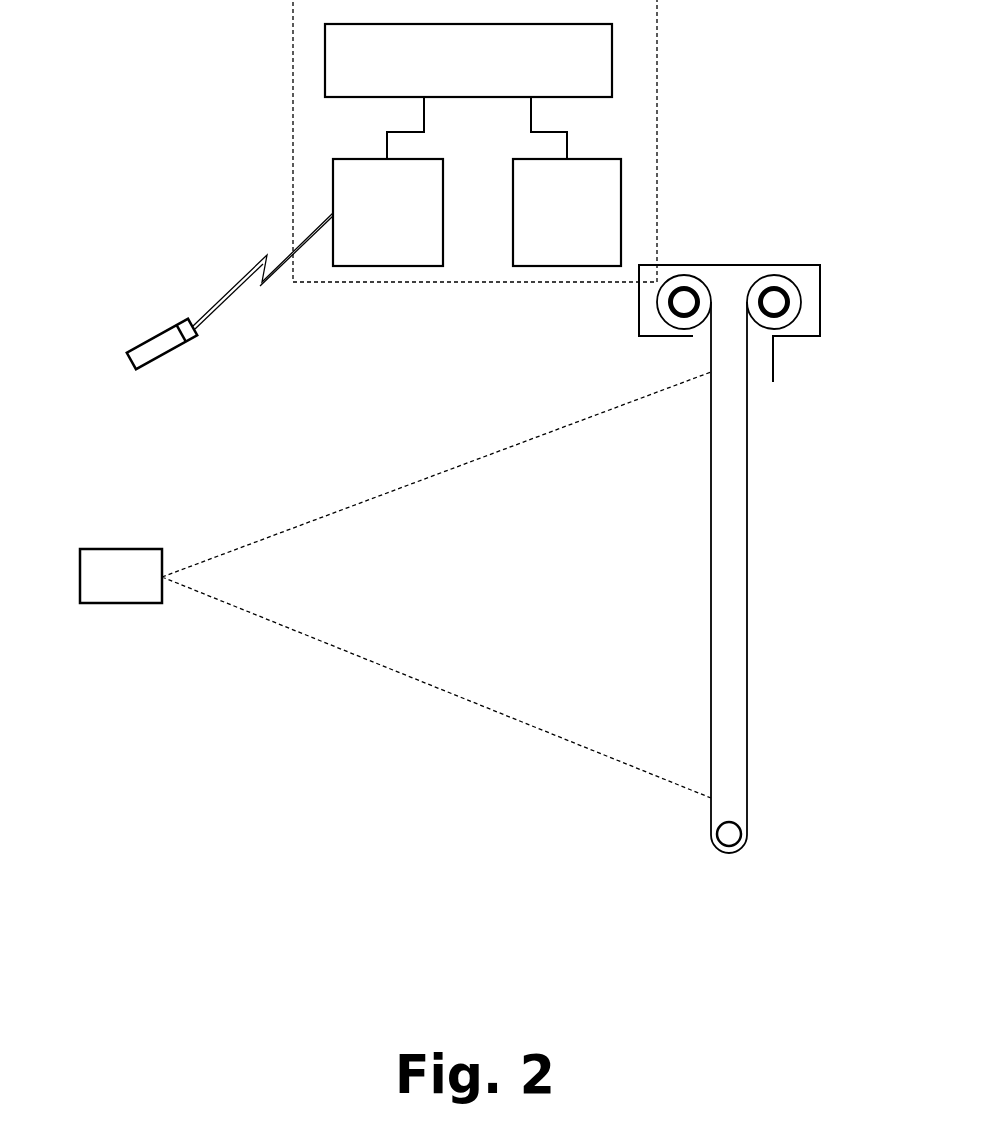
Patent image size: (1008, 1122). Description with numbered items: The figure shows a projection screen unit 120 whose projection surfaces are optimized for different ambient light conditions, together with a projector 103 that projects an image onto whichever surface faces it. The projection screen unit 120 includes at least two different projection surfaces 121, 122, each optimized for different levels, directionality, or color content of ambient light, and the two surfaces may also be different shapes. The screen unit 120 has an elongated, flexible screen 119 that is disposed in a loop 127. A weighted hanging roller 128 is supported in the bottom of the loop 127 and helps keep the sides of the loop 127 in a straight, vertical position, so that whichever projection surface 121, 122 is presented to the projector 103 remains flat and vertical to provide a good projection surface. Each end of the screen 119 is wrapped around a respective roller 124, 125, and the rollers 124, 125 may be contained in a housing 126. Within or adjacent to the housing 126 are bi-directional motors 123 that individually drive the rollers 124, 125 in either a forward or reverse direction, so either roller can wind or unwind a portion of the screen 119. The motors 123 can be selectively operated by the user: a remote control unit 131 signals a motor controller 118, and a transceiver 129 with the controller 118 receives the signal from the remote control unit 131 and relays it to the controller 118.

The projector 103 is at (125, 567).
The motor controller 118 is at (468, 91).
The flexible screen 119 is at (728, 577).
The projection screen unit 120 is at (727, 539).
The projection surface 121 is at (712, 572).
The projection surface 122 is at (747, 543).
The bi-directional motors 123 is at (567, 212).
The roller 124 is at (773, 301).
The roller 125 is at (683, 305).
The housing 126 is at (730, 265).
The loop 127 is at (747, 472).
The weighted hanging roller 128 is at (728, 835).
The transceiver 129 is at (388, 212).
The remote control unit 131 is at (143, 355).